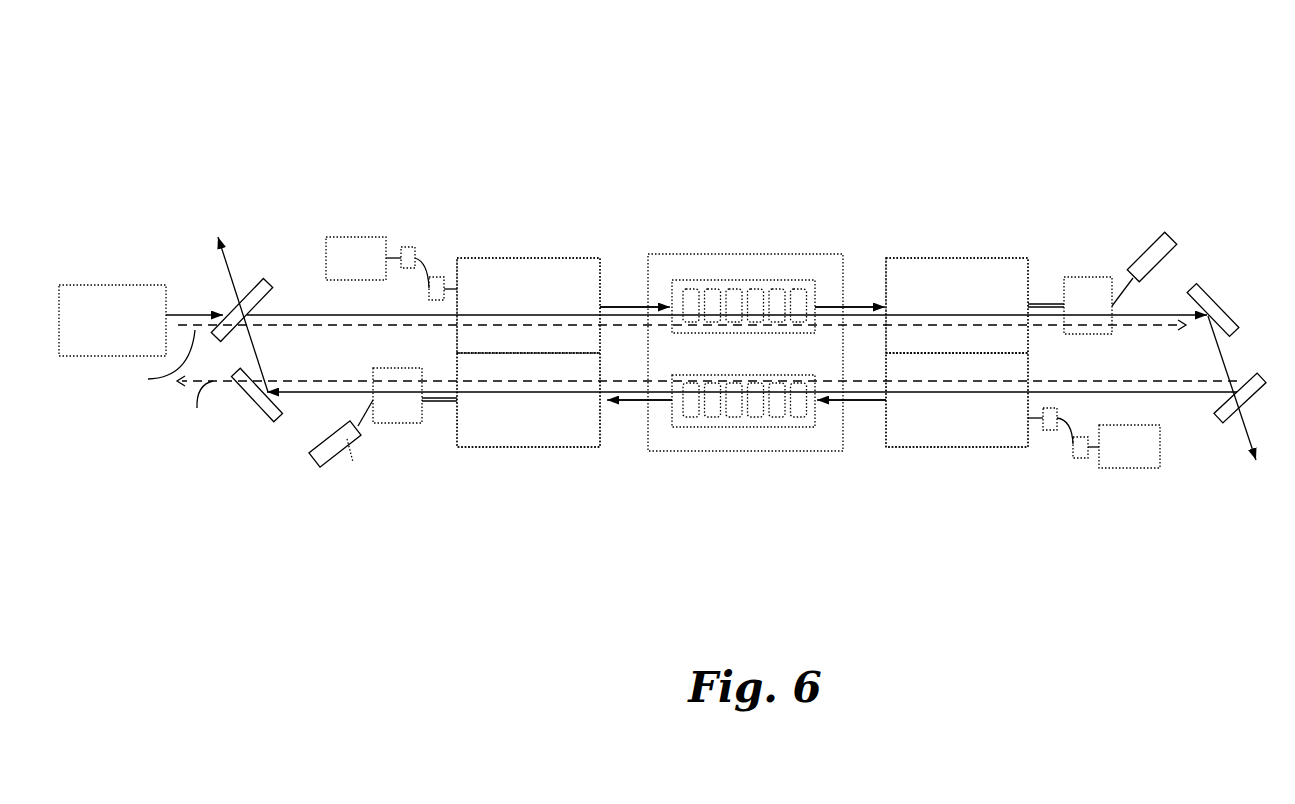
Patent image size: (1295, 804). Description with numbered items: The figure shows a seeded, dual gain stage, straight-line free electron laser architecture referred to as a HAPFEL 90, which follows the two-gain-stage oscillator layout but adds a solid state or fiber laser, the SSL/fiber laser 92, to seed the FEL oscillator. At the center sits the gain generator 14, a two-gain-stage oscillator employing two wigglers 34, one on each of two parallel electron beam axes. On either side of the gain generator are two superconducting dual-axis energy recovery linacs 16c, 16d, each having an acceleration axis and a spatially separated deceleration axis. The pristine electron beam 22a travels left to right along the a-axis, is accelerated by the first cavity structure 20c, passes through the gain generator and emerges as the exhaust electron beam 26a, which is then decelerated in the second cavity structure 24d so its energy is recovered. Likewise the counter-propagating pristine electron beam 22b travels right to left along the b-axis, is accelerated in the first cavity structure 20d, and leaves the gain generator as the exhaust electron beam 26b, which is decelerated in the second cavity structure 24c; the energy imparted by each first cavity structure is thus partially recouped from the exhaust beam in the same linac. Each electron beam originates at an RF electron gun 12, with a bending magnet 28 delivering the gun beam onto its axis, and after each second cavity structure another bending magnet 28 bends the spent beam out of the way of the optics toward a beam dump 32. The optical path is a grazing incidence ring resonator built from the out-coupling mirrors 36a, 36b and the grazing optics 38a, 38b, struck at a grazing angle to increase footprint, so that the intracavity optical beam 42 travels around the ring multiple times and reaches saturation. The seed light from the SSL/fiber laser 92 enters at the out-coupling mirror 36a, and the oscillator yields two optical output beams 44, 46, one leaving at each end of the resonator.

The HAPFEL 90 is at (190, 104).
The SSL/fiber laser 92 is at (112, 284).
The optical output beam 44 is at (232, 265).
The out-coupling mirror 36a is at (267, 280).
The grazing optics 38a is at (260, 411).
The optical beam 42 is at (355, 313).
The RF electron gun 12 is at (743, 352).
The bending magnet 28 is at (437, 277).
The beam dump 32 is at (335, 462).
The superconducting dual-axis energy recovery linac 16c is at (533, 243).
The superconducting dual-axis energy recovery linac 16d is at (958, 243).
The first cavity structure 20c is at (528, 305).
The second cavity structure 24c is at (528, 400).
The second cavity structure 24d is at (957, 305).
The first cavity structure 20d is at (957, 400).
The pristine electron beam 22a is at (628, 305).
The exhaust electron beam 26a is at (858, 305).
The pristine electron beam 22b is at (867, 400).
The exhaust electron beam 26b is at (632, 400).
The gain generator 14 is at (705, 252).
The wiggler 34 is at (743, 280).
The grazing optics 38b is at (1195, 285).
The out-coupling mirror 36b is at (1268, 372).
The optical output beam 46 is at (1237, 427).